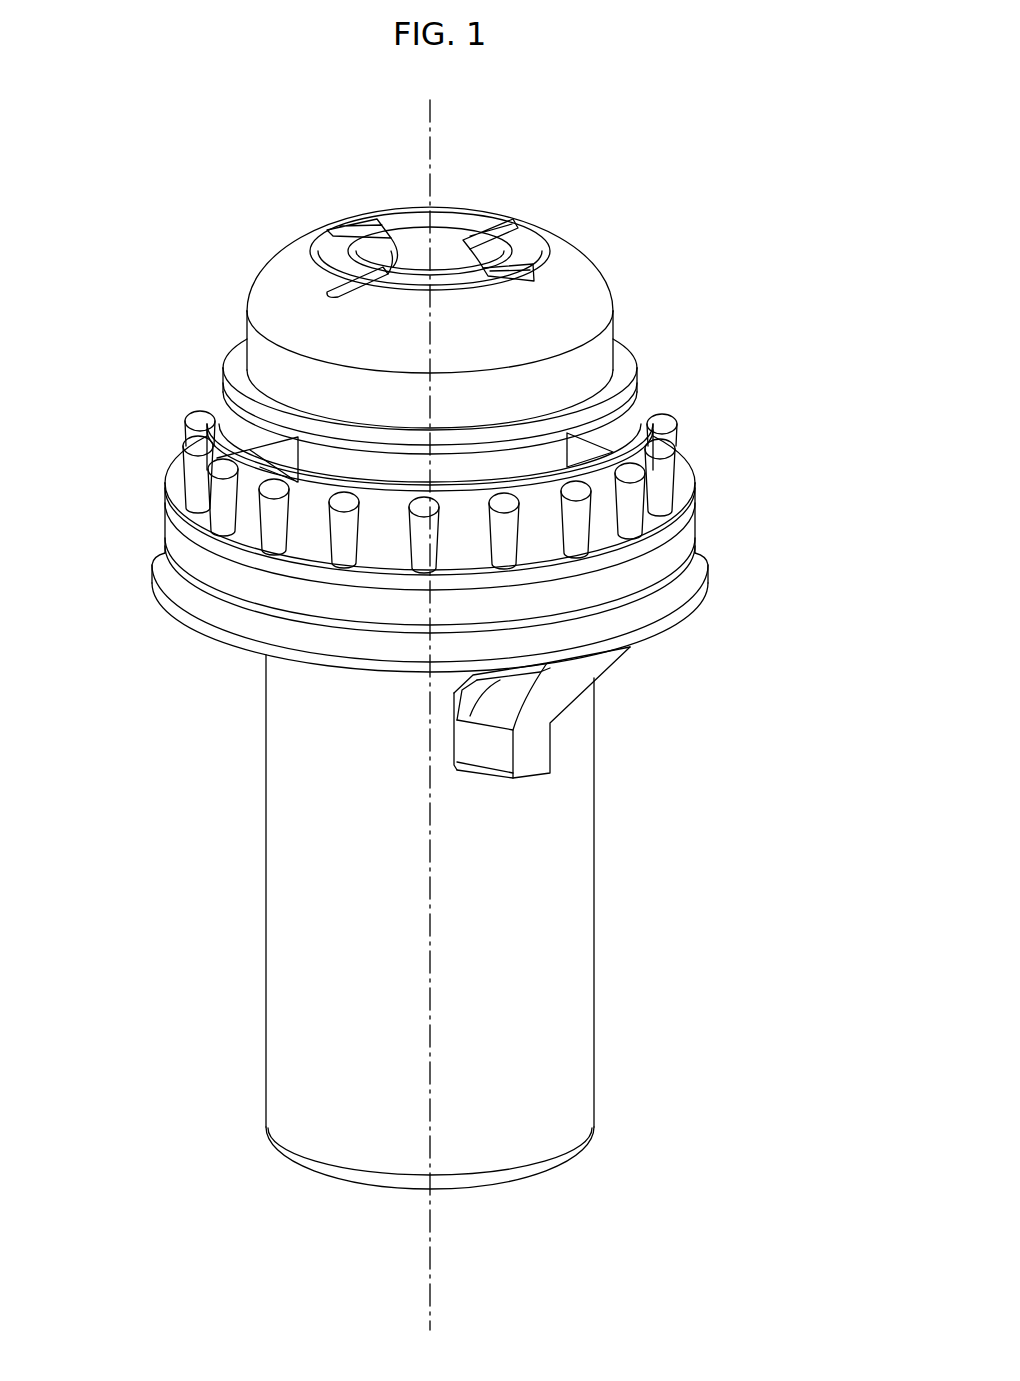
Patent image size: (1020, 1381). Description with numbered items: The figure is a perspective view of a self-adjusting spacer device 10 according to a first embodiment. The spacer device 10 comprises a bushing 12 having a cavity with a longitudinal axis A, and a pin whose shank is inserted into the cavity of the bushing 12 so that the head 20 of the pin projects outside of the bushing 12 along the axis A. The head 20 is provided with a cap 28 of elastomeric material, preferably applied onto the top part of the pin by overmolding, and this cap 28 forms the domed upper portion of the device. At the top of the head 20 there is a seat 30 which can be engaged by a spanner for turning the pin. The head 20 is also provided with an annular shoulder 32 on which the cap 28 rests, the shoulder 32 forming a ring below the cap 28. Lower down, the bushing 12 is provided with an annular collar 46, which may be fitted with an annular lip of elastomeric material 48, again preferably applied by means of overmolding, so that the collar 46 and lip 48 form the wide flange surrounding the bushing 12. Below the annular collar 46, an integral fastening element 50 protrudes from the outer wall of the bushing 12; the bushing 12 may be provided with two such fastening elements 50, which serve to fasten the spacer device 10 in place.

The self-adjusting spacer device 10 is at (816, 517).
The bushing 12 is at (605, 946).
The head 20 is at (403, 439).
The cap 28 is at (283, 280).
The seat 30 is at (452, 253).
The annular shoulder 32 is at (618, 392).
The annular collar 46 is at (187, 553).
The annular lip of elastomeric material 48 is at (192, 628).
The integral fastening element 50 is at (567, 677).
The longitudinal axis A is at (430, 1010).